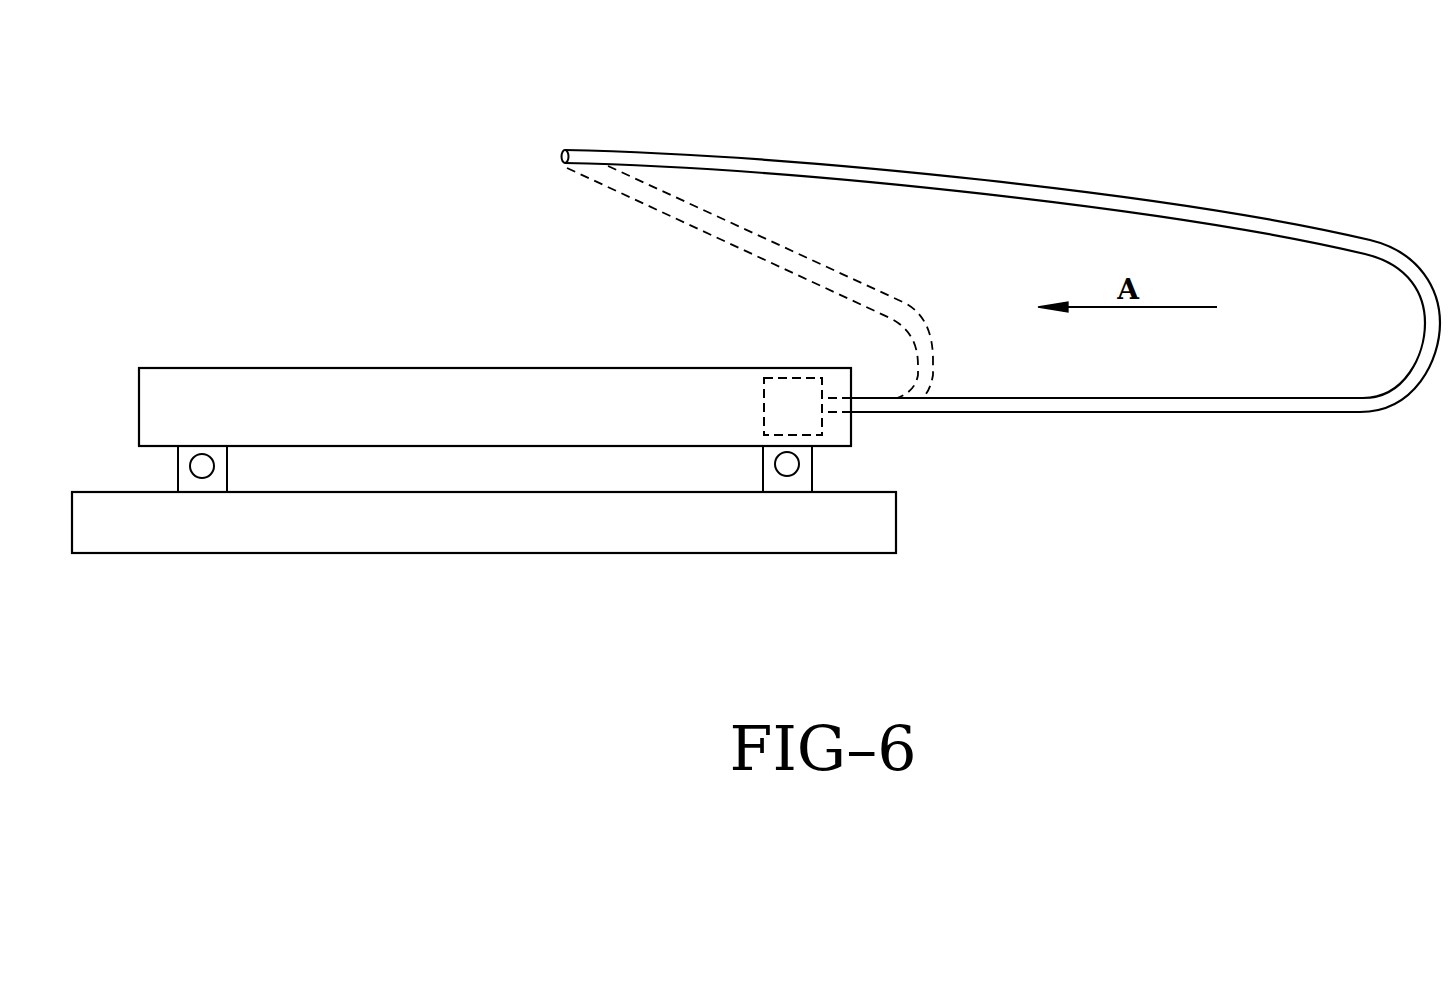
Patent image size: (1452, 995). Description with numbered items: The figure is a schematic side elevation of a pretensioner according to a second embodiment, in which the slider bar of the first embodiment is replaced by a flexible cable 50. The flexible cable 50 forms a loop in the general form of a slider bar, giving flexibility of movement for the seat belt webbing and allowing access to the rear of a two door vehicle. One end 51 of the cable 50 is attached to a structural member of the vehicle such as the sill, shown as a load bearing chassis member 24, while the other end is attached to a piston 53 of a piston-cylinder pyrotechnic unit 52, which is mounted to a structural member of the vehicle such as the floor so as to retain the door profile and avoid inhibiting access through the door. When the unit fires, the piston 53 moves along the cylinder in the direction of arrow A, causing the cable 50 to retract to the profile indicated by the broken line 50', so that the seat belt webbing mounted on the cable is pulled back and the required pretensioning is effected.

The load bearing chassis member 24 is at (313, 554).
The flexible cable 50 is at (1002, 342).
The retracted cable profile 50' is at (762, 282).
The cable end 51 is at (561, 155).
The piston-cylinder pyrotechnic unit 52 is at (290, 368).
The piston 53 is at (780, 368).